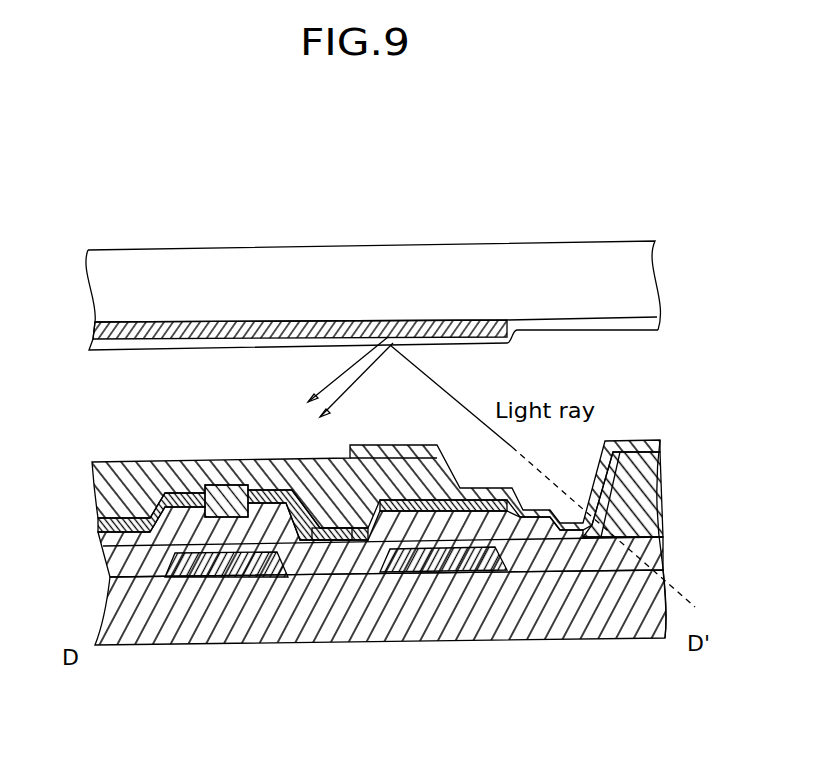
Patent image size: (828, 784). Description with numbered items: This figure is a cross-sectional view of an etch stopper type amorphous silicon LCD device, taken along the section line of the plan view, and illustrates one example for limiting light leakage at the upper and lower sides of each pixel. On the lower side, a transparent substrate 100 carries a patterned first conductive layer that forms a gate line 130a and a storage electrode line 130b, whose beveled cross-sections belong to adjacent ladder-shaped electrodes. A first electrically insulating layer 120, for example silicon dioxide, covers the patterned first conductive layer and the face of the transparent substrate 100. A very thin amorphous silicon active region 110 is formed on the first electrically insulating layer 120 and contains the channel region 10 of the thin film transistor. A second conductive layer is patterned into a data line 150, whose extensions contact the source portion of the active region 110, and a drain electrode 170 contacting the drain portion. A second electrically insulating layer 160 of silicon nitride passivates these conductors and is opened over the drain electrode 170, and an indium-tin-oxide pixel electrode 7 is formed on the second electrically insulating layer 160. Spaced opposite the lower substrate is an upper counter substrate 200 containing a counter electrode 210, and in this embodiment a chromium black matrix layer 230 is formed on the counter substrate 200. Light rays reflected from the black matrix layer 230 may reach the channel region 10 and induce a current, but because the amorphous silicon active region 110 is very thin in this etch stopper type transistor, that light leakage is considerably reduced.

The upper counter substrate 200 is at (143, 288).
The black matrix layer 230 is at (417, 322).
The counter electrode 210 is at (567, 320).
The transparent substrate 100 is at (359, 605).
The amorphous silicon active region 110 is at (148, 540).
The first electrically insulating layer 120 is at (560, 532).
The gate line 130a is at (263, 565).
The storage electrode line 130b is at (470, 560).
The data line 150 is at (144, 625).
The channel region 10 is at (223, 517).
The drain electrode 170 is at (294, 540).
The second electrically insulating layer 160 is at (410, 511).
The pixel electrode 7 is at (623, 453).